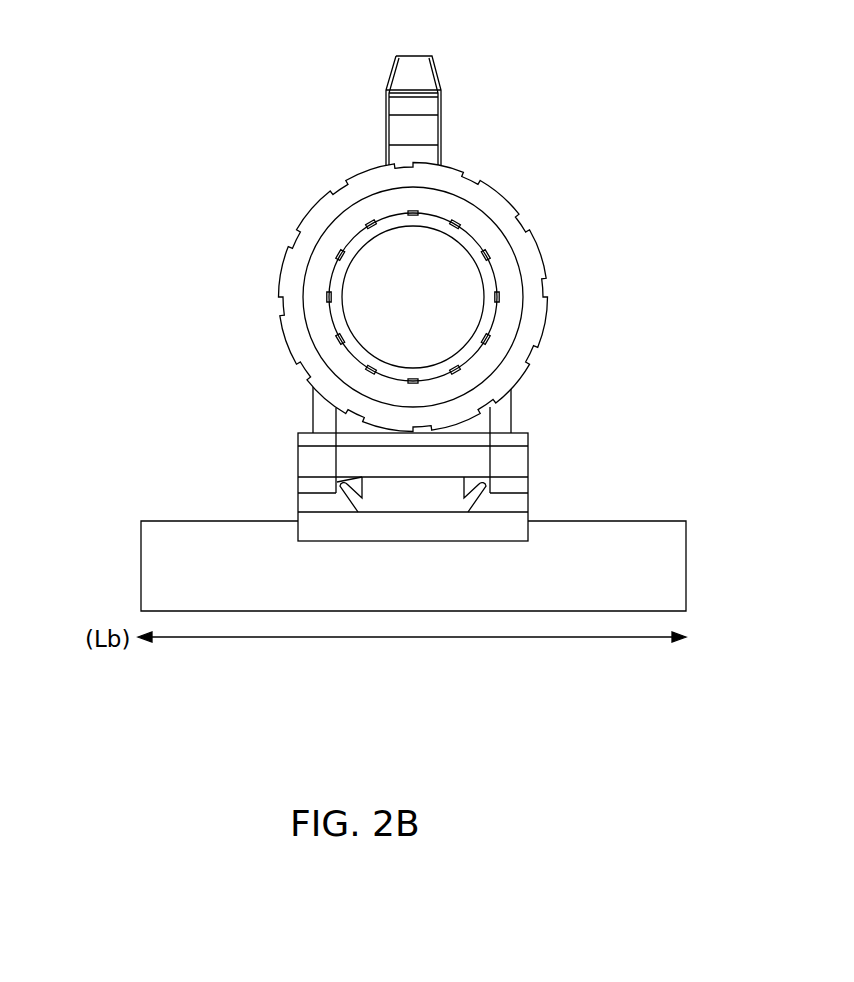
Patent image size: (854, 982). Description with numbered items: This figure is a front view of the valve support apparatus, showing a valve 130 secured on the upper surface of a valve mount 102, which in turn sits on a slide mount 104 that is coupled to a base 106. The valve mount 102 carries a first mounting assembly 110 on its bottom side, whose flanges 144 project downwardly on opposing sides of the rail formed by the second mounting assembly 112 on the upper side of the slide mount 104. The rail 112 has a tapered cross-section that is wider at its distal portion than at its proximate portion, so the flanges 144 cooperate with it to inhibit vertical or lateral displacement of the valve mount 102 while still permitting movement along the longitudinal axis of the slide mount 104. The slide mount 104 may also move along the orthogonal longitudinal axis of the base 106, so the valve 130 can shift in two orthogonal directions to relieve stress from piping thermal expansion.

The valve 130 is at (353, 173).
The valve mount 102 is at (518, 412).
The slide mount 104 is at (321, 523).
The flanges 144 is at (320, 483).
The second mounting assembly 112 is at (416, 493).
The first mounting assembly 110 is at (438, 477).
The base 106 is at (162, 563).